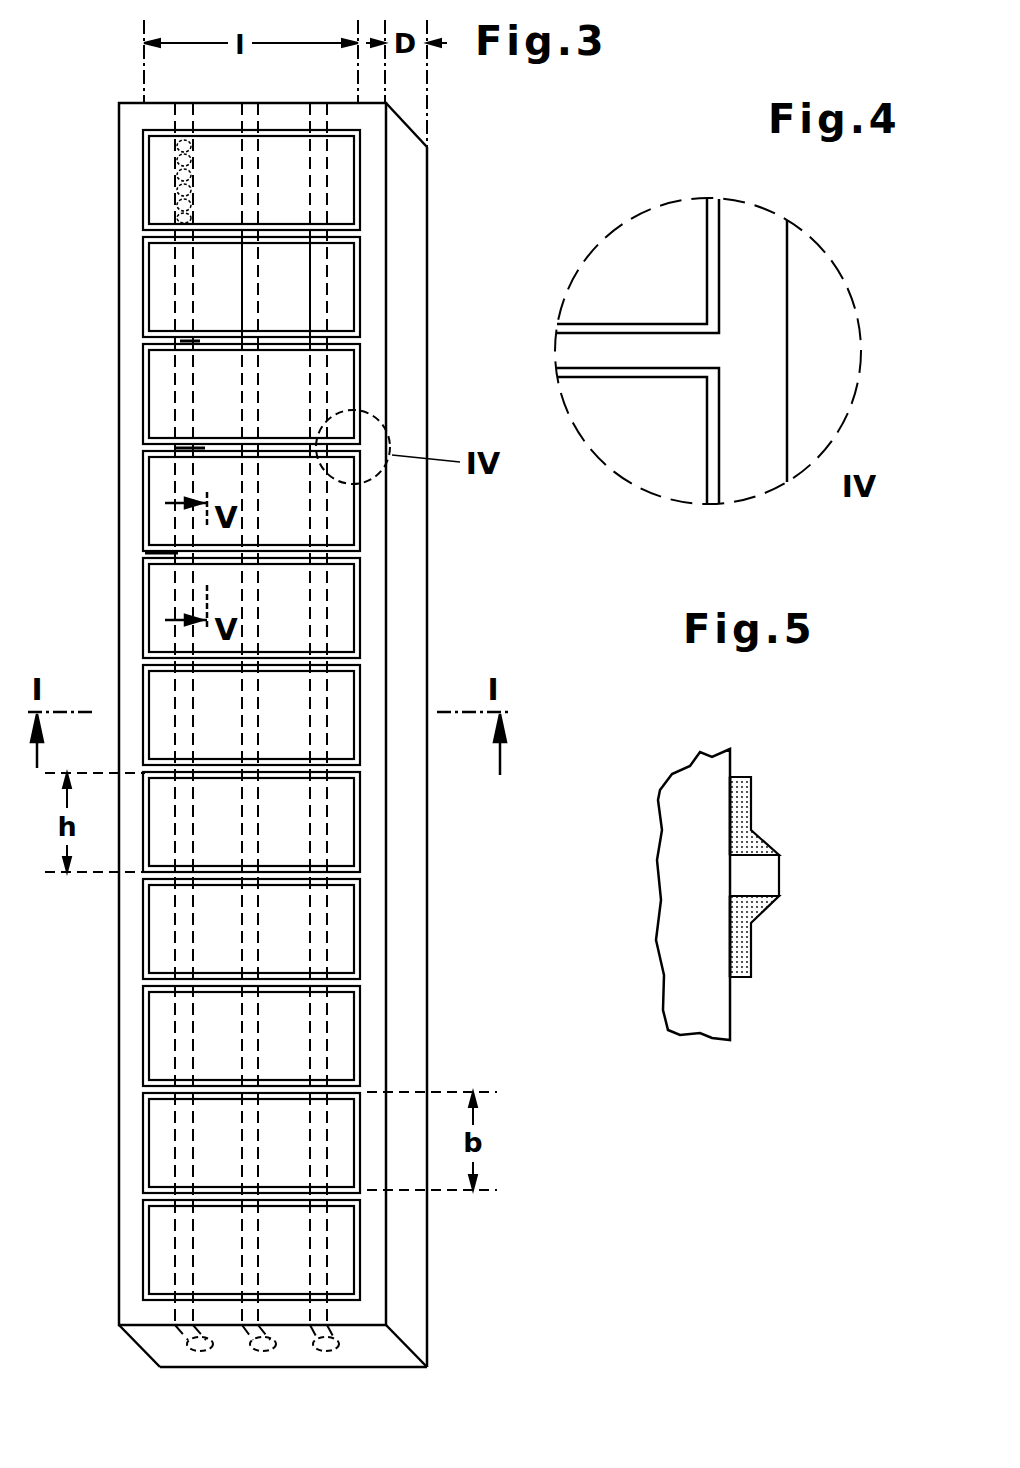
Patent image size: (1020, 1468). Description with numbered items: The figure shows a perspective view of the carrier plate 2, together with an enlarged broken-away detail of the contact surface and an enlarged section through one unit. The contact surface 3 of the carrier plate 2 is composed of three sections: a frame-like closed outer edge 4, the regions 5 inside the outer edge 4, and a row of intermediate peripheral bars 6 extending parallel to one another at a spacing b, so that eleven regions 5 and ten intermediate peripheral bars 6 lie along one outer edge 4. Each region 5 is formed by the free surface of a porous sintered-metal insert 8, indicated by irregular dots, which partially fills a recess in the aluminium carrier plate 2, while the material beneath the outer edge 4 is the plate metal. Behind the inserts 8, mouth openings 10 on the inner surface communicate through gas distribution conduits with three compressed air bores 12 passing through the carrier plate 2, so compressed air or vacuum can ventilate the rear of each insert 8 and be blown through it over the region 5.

In FIG. 3, the carrier plate 2 is at (405, 437).
In FIG. 5, the carrier plate 2 is at (687, 809).
In FIG. 3, the contact surface 3 is at (298, 825).
In FIG. 3, the outer edge 4 is at (128, 117).
In FIG. 4, the outer edge 4 is at (759, 269).
In FIG. 3, the region 5 is at (277, 163).
In FIG. 4, the region 5 is at (662, 269).
In FIG. 5, the region 5 is at (753, 806).
In FIG. 3, the intermediate peripheral bar 6 is at (190, 345).
In FIG. 4, the intermediate peripheral bar 6 is at (622, 352).
In FIG. 5, the intermediate peripheral bar 6 is at (781, 870).
In FIG. 5, the insert 8 is at (741, 789).
In FIG. 3, the mouth opening 10 is at (182, 173).
In FIG. 3, the compressed air bore 12 is at (248, 295).